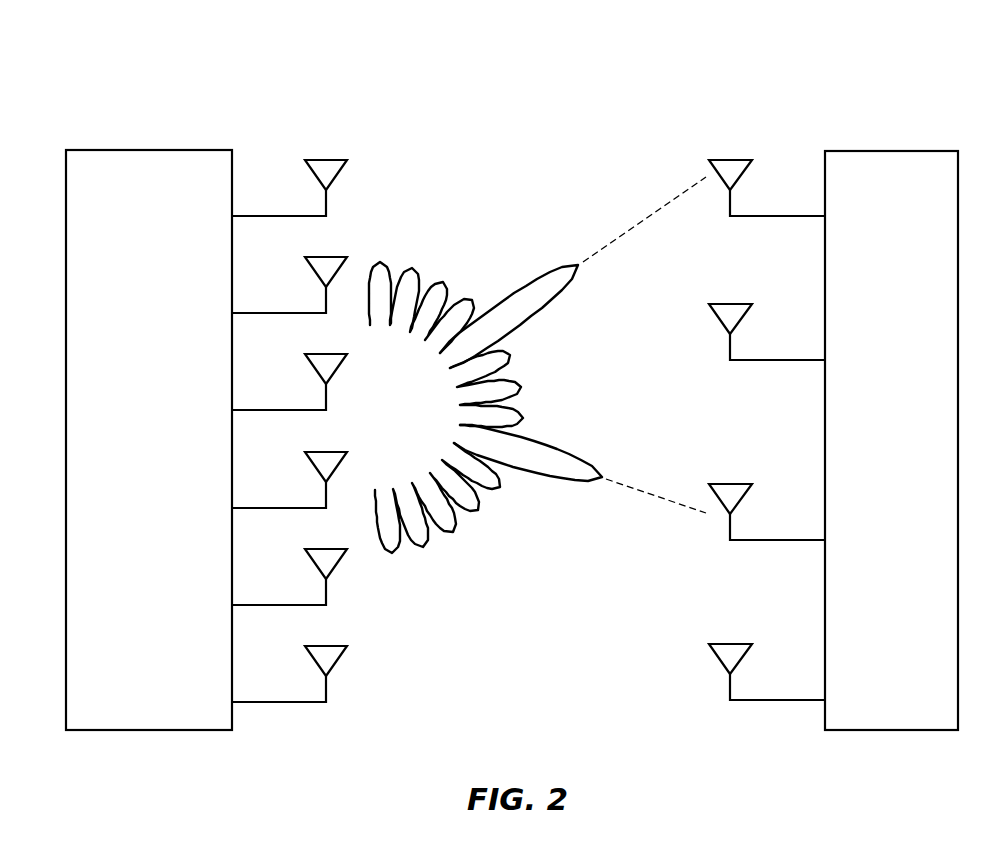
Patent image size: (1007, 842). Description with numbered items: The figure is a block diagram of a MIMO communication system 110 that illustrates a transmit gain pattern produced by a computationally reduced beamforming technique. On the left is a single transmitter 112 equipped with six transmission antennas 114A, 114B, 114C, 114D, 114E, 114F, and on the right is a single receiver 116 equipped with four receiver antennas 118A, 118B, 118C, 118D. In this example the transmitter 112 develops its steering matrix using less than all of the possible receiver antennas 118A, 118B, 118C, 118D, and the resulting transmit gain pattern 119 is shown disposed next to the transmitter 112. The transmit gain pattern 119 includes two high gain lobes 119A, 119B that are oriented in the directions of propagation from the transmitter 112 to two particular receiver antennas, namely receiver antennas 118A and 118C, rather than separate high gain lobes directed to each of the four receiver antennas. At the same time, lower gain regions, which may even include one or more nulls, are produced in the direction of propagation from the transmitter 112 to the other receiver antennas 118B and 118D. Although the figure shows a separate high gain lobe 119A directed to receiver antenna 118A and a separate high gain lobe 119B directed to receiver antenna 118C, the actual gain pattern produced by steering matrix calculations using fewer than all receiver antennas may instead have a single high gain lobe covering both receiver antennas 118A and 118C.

The MIMO communication system 110 is at (604, 62).
The transmitter 112 is at (167, 150).
The transmission antenna 114A is at (305, 162).
The transmission antenna 114B is at (305, 259).
The transmission antenna 114C is at (305, 356).
The transmission antenna 114D is at (305, 454).
The transmission antenna 114E is at (305, 551).
The transmission antenna 114F is at (305, 648).
The receiver 116 is at (890, 150).
The receiver antenna 118A is at (752, 162).
The receiver antenna 118B is at (752, 306).
The receiver antenna 118C is at (752, 486).
The receiver antenna 118D is at (752, 646).
The transmit gain pattern 119 is at (398, 265).
The high gain lobe 119A is at (511, 292).
The high gain lobe 119B is at (578, 458).